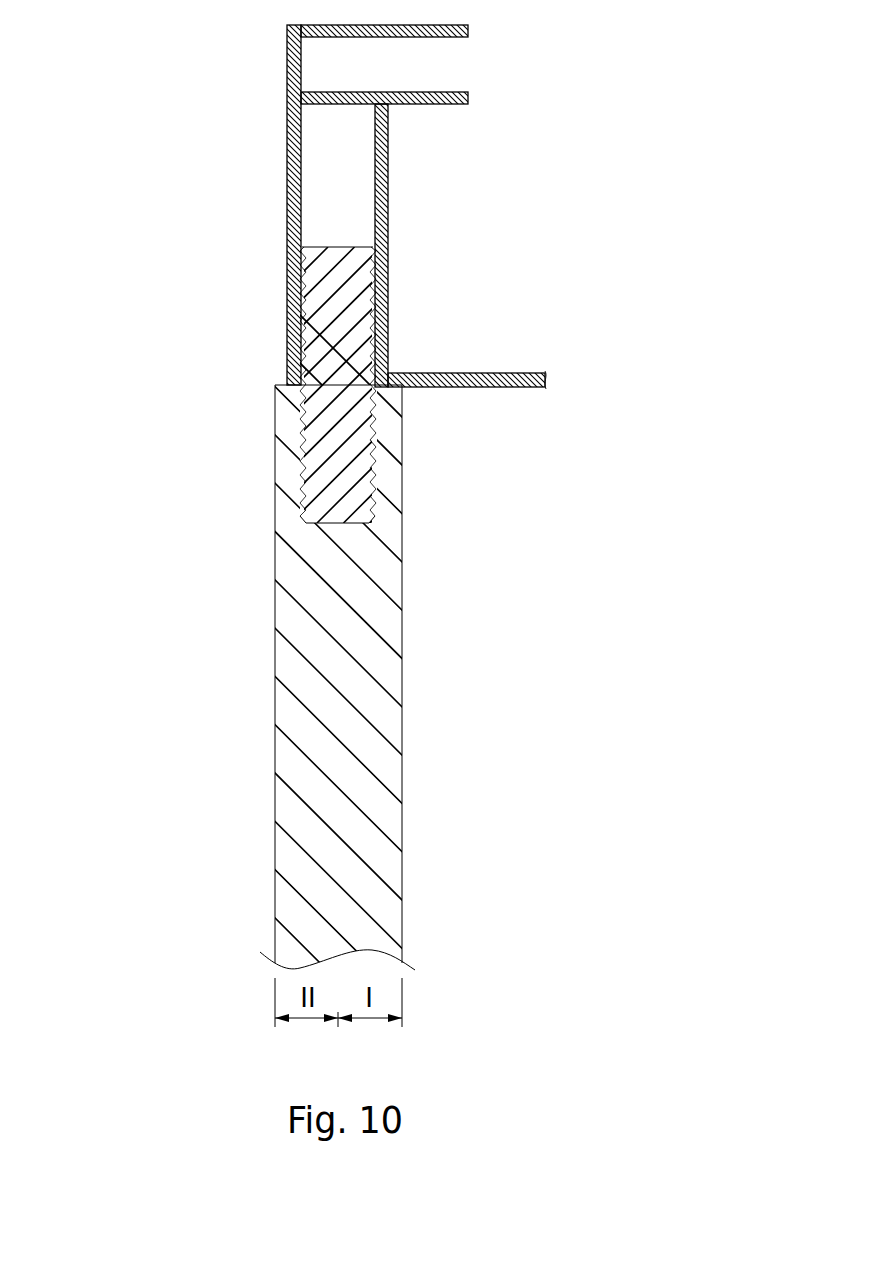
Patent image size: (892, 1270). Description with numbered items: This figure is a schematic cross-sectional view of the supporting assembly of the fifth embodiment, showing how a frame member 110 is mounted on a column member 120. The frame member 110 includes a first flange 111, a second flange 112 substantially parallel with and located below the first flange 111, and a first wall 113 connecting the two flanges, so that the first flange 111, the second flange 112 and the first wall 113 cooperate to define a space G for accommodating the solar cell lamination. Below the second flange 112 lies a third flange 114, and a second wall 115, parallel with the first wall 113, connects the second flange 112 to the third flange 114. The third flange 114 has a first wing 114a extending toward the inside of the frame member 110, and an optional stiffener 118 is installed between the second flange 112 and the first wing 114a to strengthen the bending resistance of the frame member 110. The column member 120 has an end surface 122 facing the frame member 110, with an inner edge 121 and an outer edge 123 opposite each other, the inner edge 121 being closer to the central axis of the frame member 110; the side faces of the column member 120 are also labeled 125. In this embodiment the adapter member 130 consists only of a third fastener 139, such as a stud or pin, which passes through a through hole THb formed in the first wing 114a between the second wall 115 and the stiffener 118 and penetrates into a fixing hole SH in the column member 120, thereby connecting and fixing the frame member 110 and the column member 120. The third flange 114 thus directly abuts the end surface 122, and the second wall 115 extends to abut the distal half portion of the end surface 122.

The frame member 110 is at (409, 200).
The first flange 111 is at (468, 33).
The second flange 112 is at (468, 100).
The first wall 113 is at (287, 60).
The third flange 114 is at (485, 341).
The first wing 114a is at (515, 374).
The second wall 115 is at (301, 142).
The stiffener 118 is at (388, 182).
The column member 120 is at (338, 693).
The inner edge 121 is at (398, 388).
The end surface 122 is at (300, 410).
The outer edge 123 is at (298, 390).
The outer surface 125 is at (275, 678).
The adapter member 130 is at (349, 385).
The third fastener 139 is at (315, 467).
The space G is at (470, 70).
The through hole THb is at (386, 372).
The fixing hole SH is at (385, 469).